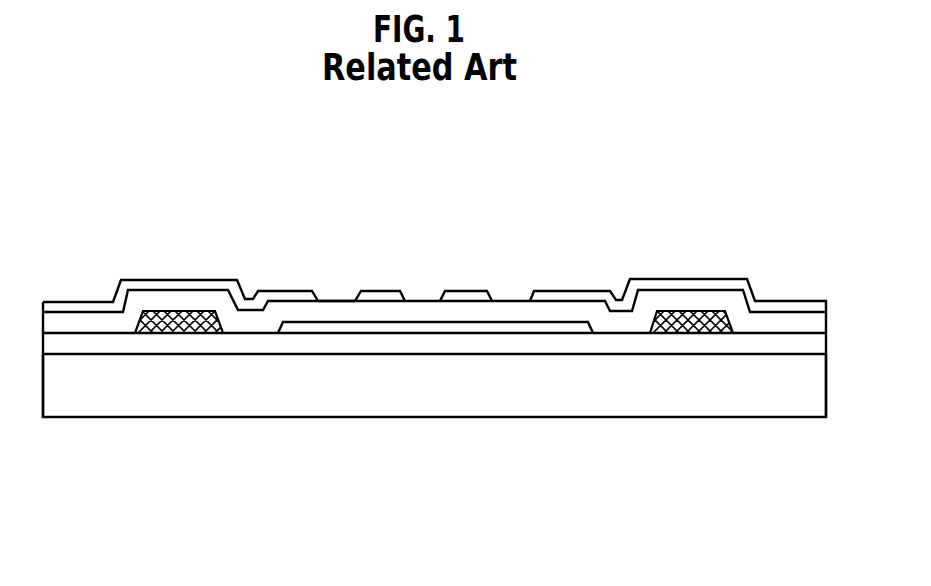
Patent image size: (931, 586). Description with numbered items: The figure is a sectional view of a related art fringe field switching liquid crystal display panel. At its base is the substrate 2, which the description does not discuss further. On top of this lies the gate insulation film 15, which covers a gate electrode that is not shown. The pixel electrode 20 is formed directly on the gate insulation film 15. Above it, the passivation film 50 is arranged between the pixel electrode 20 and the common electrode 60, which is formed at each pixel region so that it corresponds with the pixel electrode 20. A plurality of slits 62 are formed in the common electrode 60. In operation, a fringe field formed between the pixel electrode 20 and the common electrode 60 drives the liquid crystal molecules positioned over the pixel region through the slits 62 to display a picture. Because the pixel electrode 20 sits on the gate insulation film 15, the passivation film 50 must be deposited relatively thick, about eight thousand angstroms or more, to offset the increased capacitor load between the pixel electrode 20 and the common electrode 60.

The substrate 2 is at (827, 388).
The gate insulation film 15 is at (827, 343).
The pixel electrode 20 is at (406, 325).
The passivation film 50 is at (827, 320).
The common electrode 60 is at (379, 291).
The slits 62 is at (333, 281).